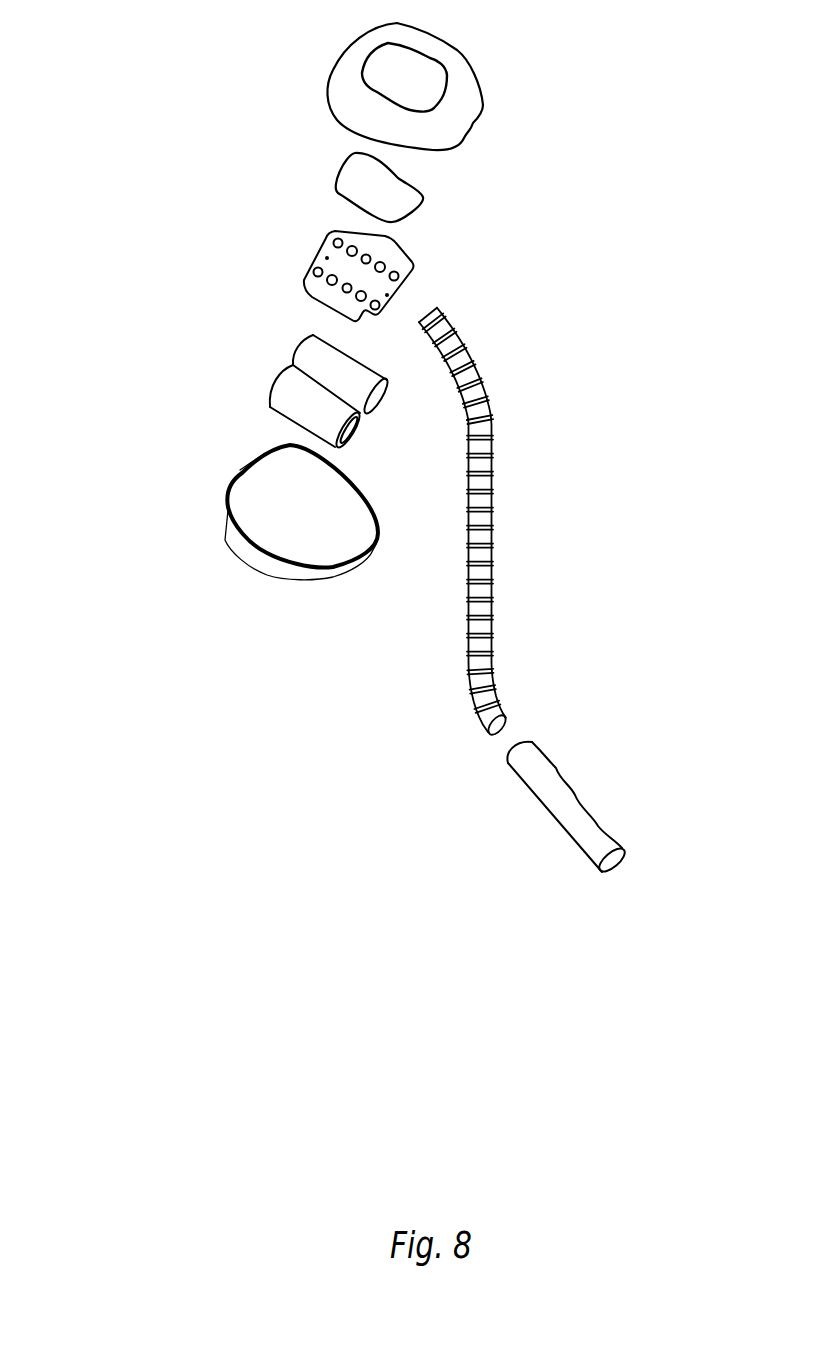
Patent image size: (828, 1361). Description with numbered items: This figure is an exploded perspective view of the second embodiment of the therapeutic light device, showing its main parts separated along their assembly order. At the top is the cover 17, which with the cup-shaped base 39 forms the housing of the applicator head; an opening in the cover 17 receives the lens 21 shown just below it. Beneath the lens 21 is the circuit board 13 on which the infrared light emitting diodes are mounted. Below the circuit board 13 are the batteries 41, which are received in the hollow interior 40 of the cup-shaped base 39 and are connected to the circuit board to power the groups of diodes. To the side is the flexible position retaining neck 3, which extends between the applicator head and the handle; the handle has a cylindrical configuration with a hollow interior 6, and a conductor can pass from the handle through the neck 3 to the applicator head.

The cover 17 is at (470, 92).
The lens 21 is at (415, 192).
The circuit board 13 is at (415, 268).
The batteries 41 is at (285, 392).
The hollow interior 40 is at (260, 478).
The cup-shaped base 39 is at (300, 572).
The neck 3 is at (515, 523).
The hollow interior 6 is at (573, 812).